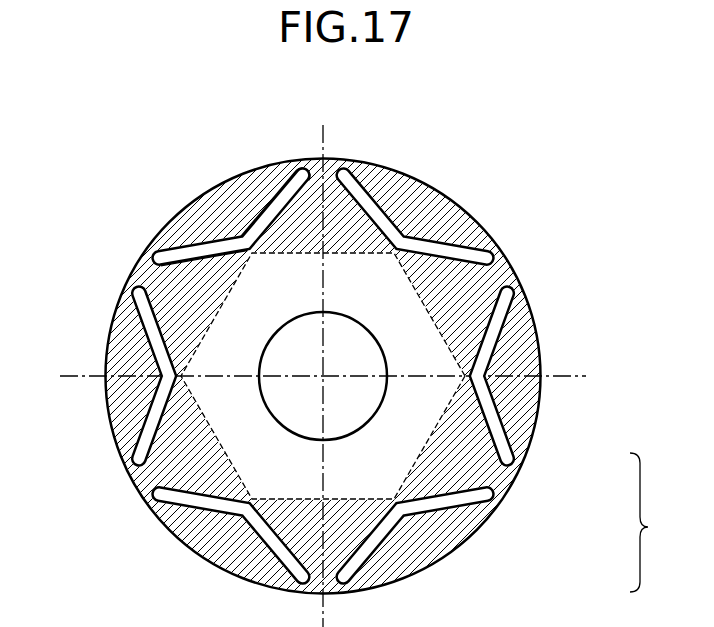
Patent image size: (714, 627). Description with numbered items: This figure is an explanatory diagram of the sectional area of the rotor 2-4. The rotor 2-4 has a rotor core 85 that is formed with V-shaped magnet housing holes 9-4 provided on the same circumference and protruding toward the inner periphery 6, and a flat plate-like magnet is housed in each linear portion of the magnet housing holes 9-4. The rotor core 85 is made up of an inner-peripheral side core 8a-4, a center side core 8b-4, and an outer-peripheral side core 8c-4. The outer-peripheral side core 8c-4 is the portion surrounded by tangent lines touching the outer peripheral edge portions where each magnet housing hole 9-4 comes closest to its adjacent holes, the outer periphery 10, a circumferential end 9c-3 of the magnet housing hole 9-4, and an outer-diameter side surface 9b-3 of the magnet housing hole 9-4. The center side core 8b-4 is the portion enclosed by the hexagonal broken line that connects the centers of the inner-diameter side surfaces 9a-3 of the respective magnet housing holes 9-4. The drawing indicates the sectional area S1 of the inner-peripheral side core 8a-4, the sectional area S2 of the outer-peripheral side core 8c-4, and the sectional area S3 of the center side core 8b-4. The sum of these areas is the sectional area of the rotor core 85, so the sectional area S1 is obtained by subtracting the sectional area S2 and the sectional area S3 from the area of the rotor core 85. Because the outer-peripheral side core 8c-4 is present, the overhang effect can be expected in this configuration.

The rotor 2-4 is at (494, 190).
The outer periphery 10 is at (382, 163).
The inner periphery 6 is at (265, 404).
The magnet housing hole 9-4 is at (217, 247).
The inner-diameter side surface 9a-3 is at (178, 268).
The outer-diameter side surface 9b-3 is at (268, 193).
The circumferential end 9c-3 is at (306, 166).
The inner-peripheral side core 8a-4 is at (485, 474).
The center side core 8b-4 is at (487, 453).
The outer-peripheral side core 8c-4 is at (458, 528).
The rotor core 85 is at (653, 522).
The sectional area of the inner-peripheral side core S1 is at (450, 455).
The sectional area of the outer-peripheral side core S2 is at (420, 540).
The sectional area of the center side core S3 is at (360, 470).